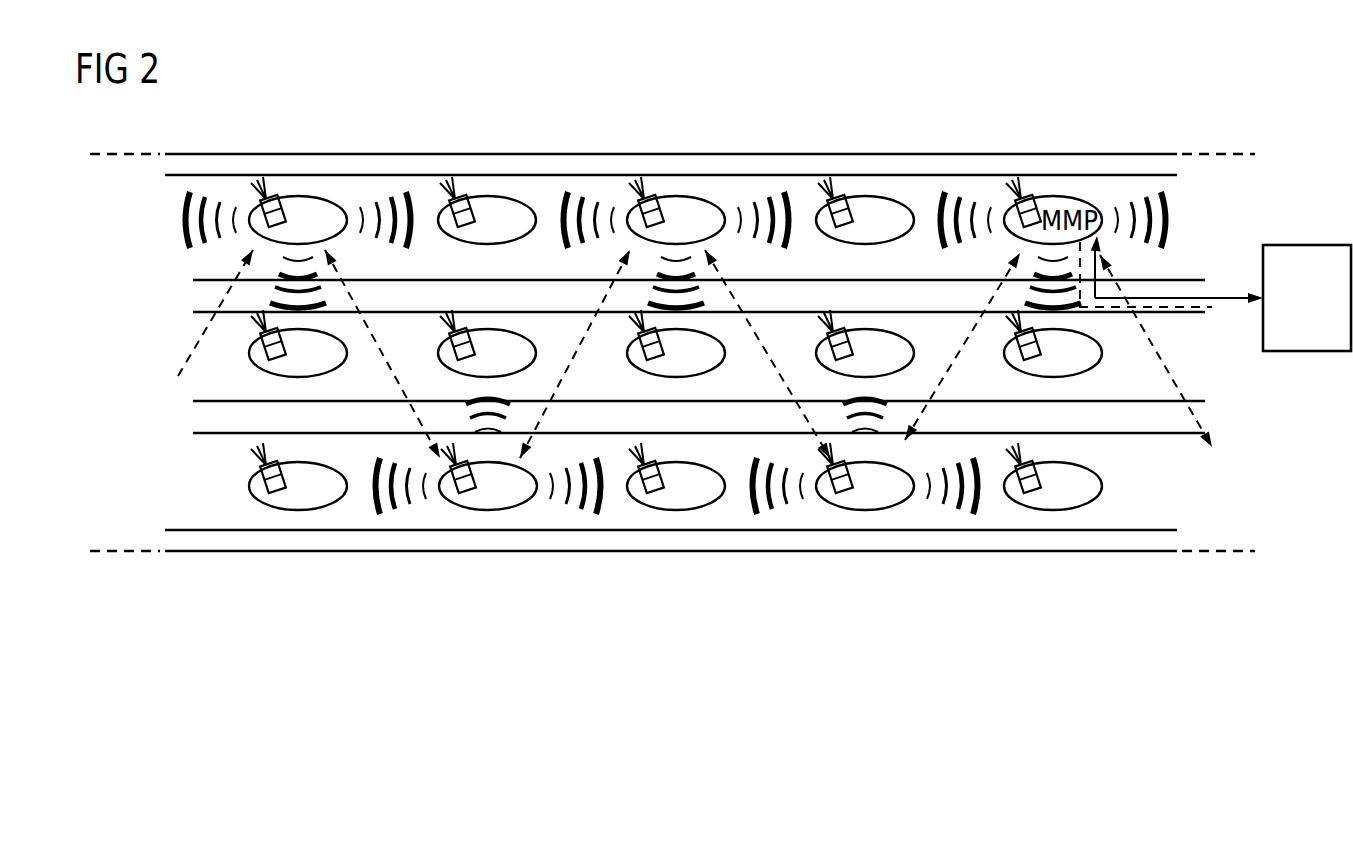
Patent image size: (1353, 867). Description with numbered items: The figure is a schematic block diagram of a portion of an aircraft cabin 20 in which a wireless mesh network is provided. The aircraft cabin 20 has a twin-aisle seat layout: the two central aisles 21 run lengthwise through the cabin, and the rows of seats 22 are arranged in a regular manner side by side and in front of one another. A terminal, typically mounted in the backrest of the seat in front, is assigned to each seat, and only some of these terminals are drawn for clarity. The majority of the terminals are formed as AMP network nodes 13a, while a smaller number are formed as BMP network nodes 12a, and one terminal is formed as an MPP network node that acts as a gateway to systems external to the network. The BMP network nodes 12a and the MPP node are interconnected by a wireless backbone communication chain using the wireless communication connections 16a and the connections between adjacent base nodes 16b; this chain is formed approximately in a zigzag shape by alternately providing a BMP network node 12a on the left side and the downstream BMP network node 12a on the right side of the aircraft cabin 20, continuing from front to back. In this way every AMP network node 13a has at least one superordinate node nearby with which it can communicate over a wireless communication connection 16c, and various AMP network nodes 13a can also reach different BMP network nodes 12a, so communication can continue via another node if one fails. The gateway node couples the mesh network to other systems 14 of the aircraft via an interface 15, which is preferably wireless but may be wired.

The BMP network node 12a is at (305, 196).
The AMP network node 13a is at (254, 362).
The other systems 14 is at (1307, 245).
The interface 15 is at (1220, 298).
The wireless communication connection 16a is at (928, 378).
The wireless communication connection between adjacent base network nodes 16b is at (370, 338).
The wireless communication connection 16c is at (601, 507).
The aircraft cabin 20 is at (940, 153).
The central aisles 21 is at (152, 297).
The rows of seats 22 is at (152, 221).